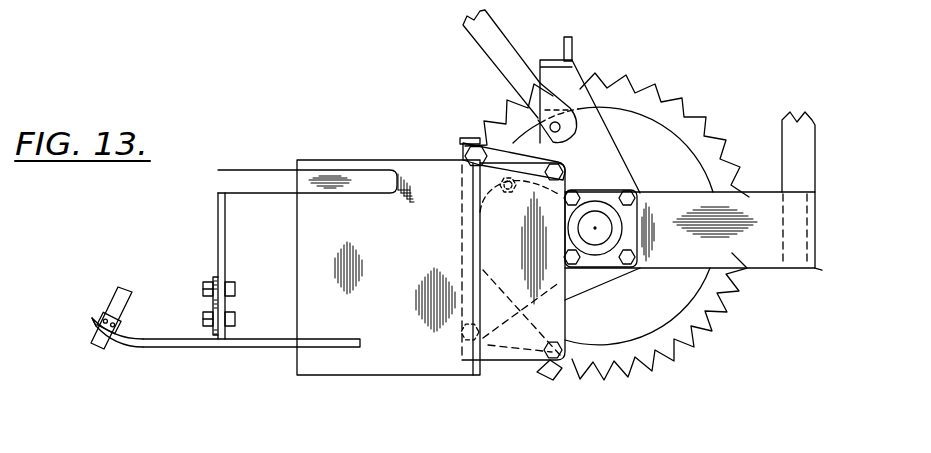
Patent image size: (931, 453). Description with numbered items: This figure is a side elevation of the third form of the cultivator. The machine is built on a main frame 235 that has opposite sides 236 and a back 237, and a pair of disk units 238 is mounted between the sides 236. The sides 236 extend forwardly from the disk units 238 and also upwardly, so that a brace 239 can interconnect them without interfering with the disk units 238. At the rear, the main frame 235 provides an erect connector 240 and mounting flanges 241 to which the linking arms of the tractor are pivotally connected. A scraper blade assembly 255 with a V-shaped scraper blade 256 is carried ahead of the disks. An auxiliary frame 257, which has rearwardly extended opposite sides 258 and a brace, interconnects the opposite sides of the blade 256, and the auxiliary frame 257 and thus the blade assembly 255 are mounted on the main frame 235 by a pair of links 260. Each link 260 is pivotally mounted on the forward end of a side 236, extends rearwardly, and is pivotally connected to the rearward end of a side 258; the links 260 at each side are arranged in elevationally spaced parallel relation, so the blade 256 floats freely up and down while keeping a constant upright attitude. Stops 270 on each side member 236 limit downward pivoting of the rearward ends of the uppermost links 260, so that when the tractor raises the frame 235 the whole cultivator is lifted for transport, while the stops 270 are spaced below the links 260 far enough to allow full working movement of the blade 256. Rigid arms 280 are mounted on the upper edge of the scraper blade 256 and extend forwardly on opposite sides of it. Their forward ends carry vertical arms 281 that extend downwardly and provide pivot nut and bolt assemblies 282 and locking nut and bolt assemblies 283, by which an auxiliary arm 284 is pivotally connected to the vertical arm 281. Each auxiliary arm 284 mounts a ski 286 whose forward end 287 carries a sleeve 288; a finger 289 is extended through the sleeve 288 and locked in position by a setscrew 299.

The main frame 235 is at (831, 278).
The opposite sides 236 is at (758, 257).
The back 237 is at (815, 222).
The disk units 238 is at (690, 130).
The brace 239 is at (573, 53).
The erect connector 240 is at (803, 163).
The mounting flanges 241 is at (577, 98).
The scraper blade assembly 255 is at (317, 150).
The V-shaped scraper blade 256 is at (418, 170).
The auxiliary frame 257 is at (525, 378).
The opposite sides 258 is at (553, 322).
The links 260 is at (490, 143).
The stops 270 is at (467, 212).
The rigid arms 280 is at (297, 187).
The vertical arms 281 is at (221, 218).
The pivot nut and bolt assemblies 282 is at (204, 330).
The locking nut and bolt assemblies 283 is at (232, 289).
The auxiliary arm 284 is at (213, 278).
The ski 286 is at (272, 343).
The forward end 287 is at (85, 325).
The sleeve 288 is at (100, 318).
The finger 289 is at (118, 297).
The setscrew 299 is at (115, 325).